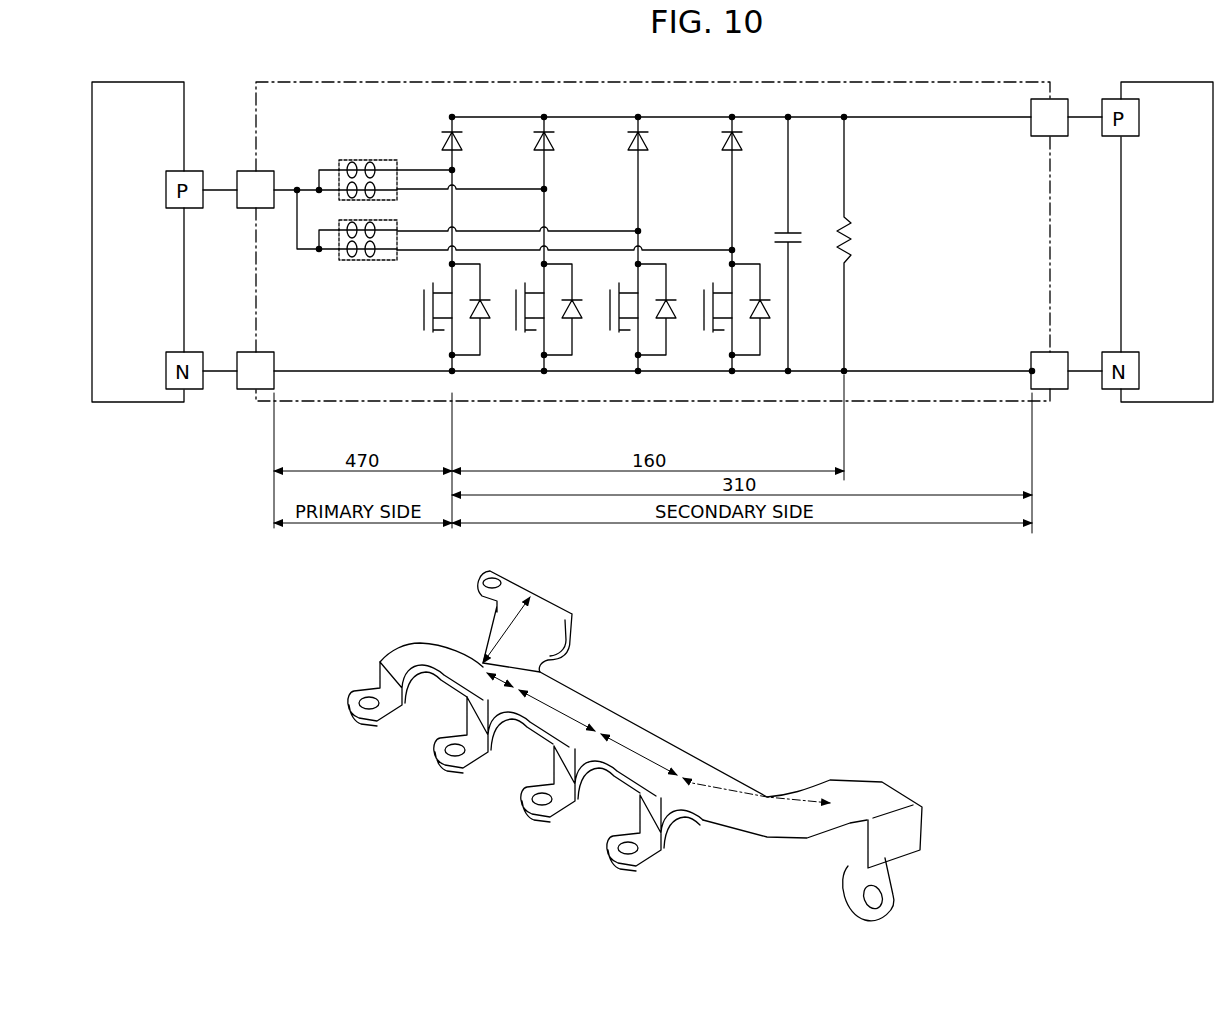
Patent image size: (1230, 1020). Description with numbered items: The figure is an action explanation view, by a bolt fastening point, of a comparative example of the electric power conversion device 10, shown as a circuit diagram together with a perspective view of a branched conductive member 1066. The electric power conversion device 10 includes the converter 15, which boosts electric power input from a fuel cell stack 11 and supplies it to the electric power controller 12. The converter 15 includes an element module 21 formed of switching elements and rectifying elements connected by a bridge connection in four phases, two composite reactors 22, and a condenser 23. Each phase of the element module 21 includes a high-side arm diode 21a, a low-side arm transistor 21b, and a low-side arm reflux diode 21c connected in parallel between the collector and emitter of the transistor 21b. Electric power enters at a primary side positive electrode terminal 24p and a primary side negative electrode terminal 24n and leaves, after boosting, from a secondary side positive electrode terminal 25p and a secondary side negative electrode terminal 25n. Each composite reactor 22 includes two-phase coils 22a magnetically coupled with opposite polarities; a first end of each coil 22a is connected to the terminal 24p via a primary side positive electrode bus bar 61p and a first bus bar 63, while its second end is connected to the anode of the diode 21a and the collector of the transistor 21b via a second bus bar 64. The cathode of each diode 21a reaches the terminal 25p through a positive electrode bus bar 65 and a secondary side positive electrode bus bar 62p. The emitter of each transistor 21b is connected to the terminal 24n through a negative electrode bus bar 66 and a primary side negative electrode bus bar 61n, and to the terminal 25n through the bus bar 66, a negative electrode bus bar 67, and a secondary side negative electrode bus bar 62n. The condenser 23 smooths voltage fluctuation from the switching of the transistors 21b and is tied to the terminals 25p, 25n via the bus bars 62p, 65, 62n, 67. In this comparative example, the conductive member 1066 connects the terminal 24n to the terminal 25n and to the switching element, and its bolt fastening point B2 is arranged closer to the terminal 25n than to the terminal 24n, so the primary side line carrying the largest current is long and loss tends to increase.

The electric power conversion device 10 is at (985, 82).
The fuel cell stack (FCS) 11 is at (150, 82).
The electric power controller 12 is at (1160, 82).
The converter 15 is at (330, 126).
The element module 21 is at (449, 127).
The high-side arm diode 21a is at (762, 158).
The low-side arm transistor 21b is at (704, 332).
The low-side arm reflux diode 21c is at (760, 320).
The composite reactor 22 is at (351, 225).
The two-phase coil 22a is at (355, 160).
The condenser 23 is at (790, 233).
The primary side positive electrode terminal 24p is at (245, 171).
The primary side negative electrode terminal 24n is at (243, 352).
The secondary side positive electrode terminal 25p is at (1050, 99).
The secondary side negative electrode terminal 25n is at (1058, 390).
The primary side positive electrode bus bar 61p is at (283, 180).
The primary side negative electrode bus bar 61n is at (300, 372).
The secondary side positive electrode bus bar 62p is at (935, 122).
The secondary side negative electrode bus bar 62n is at (935, 372).
The first bus bar 63 is at (310, 185).
The second bus bar 64 is at (396, 170).
The positive electrode bus bar 65 is at (490, 117).
The negative electrode bus bar 66 is at (741, 404).
The negative electrode bus bar 67 is at (722, 372).
The bolt fastening point B2 is at (1030, 373).
The conductive member 1066 is at (615, 722).